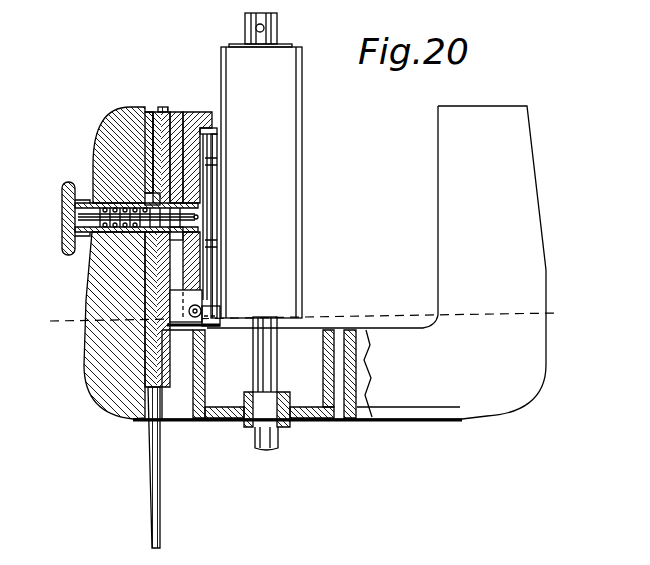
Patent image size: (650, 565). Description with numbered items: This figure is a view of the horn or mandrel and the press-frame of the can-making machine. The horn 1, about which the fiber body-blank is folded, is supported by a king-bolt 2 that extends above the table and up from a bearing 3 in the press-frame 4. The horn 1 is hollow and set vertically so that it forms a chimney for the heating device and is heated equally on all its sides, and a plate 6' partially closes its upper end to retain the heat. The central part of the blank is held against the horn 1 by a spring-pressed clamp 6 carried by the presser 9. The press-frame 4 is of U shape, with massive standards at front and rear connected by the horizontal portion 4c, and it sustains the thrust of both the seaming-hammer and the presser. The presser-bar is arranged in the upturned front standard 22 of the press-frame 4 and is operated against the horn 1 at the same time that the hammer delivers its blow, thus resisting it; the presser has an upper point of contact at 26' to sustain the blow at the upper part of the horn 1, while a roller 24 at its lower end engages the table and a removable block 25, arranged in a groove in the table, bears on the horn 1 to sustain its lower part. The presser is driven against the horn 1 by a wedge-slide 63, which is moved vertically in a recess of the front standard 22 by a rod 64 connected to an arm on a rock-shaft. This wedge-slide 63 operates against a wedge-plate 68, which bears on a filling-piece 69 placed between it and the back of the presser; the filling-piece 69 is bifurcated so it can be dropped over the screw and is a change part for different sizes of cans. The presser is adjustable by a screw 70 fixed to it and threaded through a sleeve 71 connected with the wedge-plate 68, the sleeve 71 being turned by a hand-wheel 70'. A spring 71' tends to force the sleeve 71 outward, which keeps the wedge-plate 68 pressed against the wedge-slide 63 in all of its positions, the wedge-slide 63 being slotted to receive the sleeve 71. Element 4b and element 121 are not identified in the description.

The horn 1 is at (261, 181).
The king-bolt 2 is at (258, 340).
The bearing 3 is at (248, 400).
The press-frame 4 is at (100, 368).
The frame arm 4b is at (60, 175).
The horizontal portion 4c is at (297, 375).
The spring-pressed clamp 6 is at (232, 223).
The plate 6' is at (276, 28).
The presser 9 is at (145, 138).
The upturned standard 22 is at (98, 285).
The roller 24 is at (190, 322).
The removable block 25 is at (221, 314).
The upper point of contact 26' is at (228, 193).
The wedge-slide 63 is at (145, 143).
The rod 64 is at (150, 458).
The wedge-plate 68 is at (163, 107).
The filling-piece 69 is at (172, 148).
The screw 70 is at (169, 227).
The hand-wheel 70' is at (49, 218).
The sleeve 71 is at (105, 232).
The spring 71' is at (125, 254).
The plate 121 is at (193, 113).